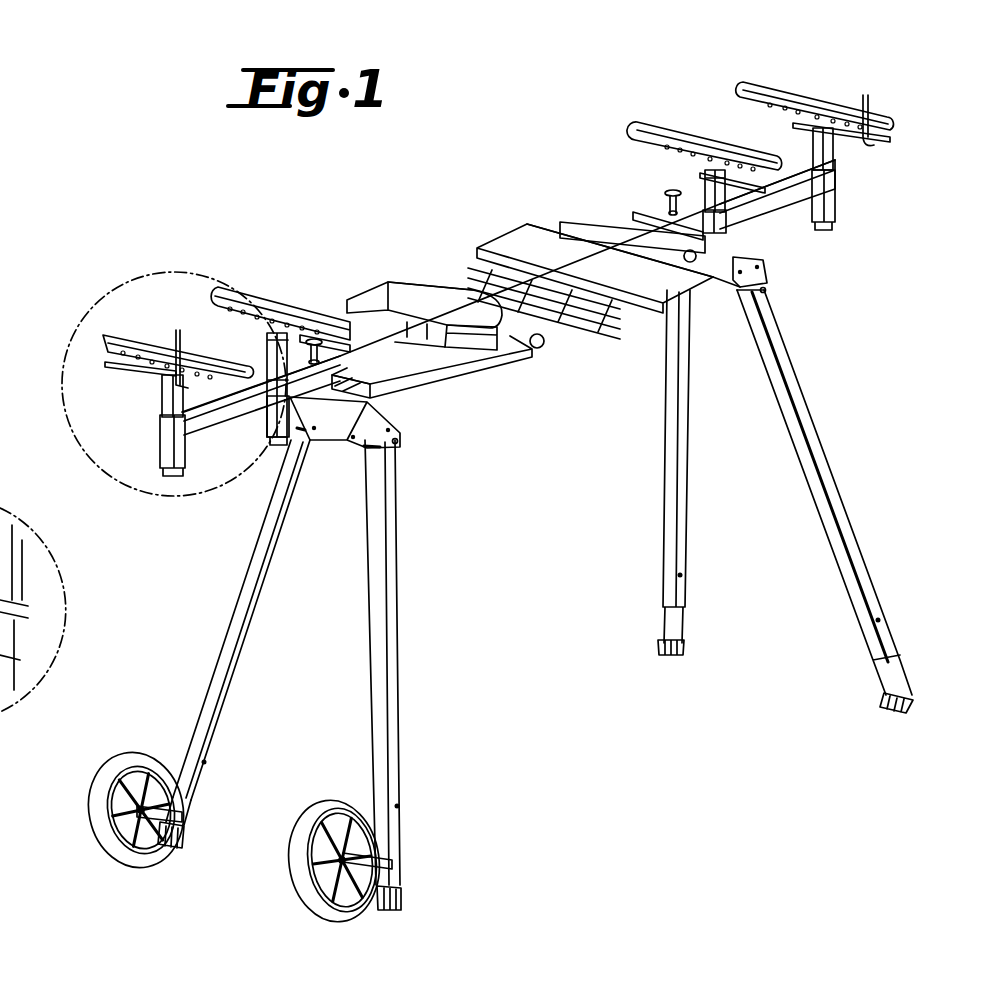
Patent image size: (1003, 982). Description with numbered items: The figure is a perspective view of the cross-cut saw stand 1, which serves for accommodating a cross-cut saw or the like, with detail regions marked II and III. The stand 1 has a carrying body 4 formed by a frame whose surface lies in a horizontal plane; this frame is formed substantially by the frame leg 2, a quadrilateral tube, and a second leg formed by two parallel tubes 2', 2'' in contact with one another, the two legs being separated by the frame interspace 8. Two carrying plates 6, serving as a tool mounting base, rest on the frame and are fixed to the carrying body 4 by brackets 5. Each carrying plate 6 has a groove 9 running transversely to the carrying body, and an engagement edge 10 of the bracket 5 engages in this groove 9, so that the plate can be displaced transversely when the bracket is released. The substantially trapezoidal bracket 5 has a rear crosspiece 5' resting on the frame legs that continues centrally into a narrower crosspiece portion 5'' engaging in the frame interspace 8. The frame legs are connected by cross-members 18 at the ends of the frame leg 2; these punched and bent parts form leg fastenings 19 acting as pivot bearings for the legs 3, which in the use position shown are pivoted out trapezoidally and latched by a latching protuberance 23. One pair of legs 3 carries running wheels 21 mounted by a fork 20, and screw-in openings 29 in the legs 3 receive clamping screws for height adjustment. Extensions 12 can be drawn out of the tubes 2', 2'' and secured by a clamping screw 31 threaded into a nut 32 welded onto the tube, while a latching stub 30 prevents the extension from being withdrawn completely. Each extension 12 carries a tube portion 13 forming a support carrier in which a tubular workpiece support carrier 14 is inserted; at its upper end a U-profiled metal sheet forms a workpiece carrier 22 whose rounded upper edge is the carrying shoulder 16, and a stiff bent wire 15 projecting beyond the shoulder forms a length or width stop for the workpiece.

The cross-cut saw stand 1 is at (357, 215).
The frame leg 2 is at (432, 395).
The tube 2' is at (620, 207).
The tube 2'' is at (444, 235).
The leg 3 is at (667, 566).
The carrying body 4 is at (761, 246).
The bracket 5 is at (521, 305).
The rear crosspiece 5' is at (446, 395).
The narrower crosspiece portion 5'' is at (424, 410).
The carrying plate 6 is at (373, 297).
The frame interspace 8 is at (367, 365).
The groove 9 is at (537, 342).
The engagement edge 10 is at (572, 240).
The extension 12 is at (207, 422).
The tube portion 13 is at (163, 450).
The workpiece support carrier 14 is at (240, 330).
The wire 15 is at (177, 333).
The carrying shoulder 16 is at (218, 290).
The cross-member 18 is at (333, 434).
The leg fastening 19 is at (312, 438).
The fork 20 is at (168, 813).
The running wheel 21 is at (113, 775).
The workpiece carrier 22 is at (237, 306).
The latching protuberance 23 is at (392, 450).
The screw-in opening 29 is at (683, 574).
The latching stub 30 is at (333, 340).
The clamping screw 31 is at (318, 338).
The nut 32 is at (290, 333).
The detail II circle II is at (147, 272).
The section III arrow III is at (824, 404).